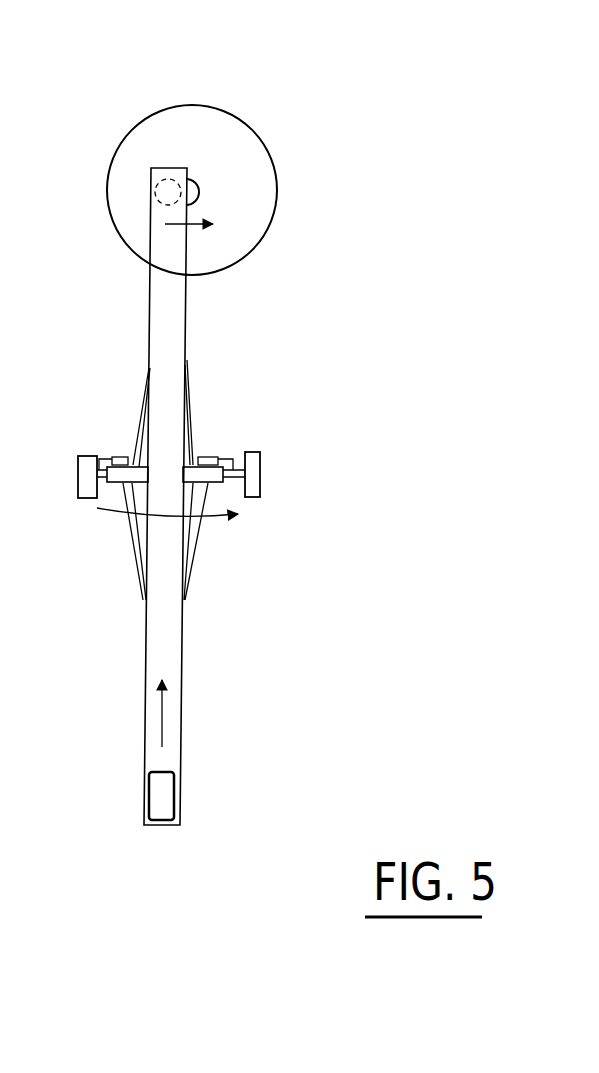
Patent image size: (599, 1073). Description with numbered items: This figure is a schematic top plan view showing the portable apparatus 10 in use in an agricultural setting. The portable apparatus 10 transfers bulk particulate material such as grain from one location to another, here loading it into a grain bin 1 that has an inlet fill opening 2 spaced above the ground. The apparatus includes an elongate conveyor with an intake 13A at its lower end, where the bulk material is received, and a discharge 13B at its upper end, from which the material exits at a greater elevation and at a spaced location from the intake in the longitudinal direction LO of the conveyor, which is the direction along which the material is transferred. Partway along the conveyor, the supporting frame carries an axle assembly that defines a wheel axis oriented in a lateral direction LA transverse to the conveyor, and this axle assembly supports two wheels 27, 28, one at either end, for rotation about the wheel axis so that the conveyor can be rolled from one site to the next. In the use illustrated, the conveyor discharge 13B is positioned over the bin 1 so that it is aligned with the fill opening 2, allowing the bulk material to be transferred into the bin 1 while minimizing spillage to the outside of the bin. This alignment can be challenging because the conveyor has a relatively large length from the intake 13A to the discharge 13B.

The bin 1 is at (243, 120).
The inlet fill opening 2 is at (200, 185).
The portable apparatus 10 is at (155, 832).
The intake 13A is at (175, 790).
The discharge 13B is at (167, 168).
The wheel 27 is at (252, 452).
The wheel 28 is at (82, 455).
The lateral direction LA is at (213, 518).
The longitudinal direction LO is at (162, 718).